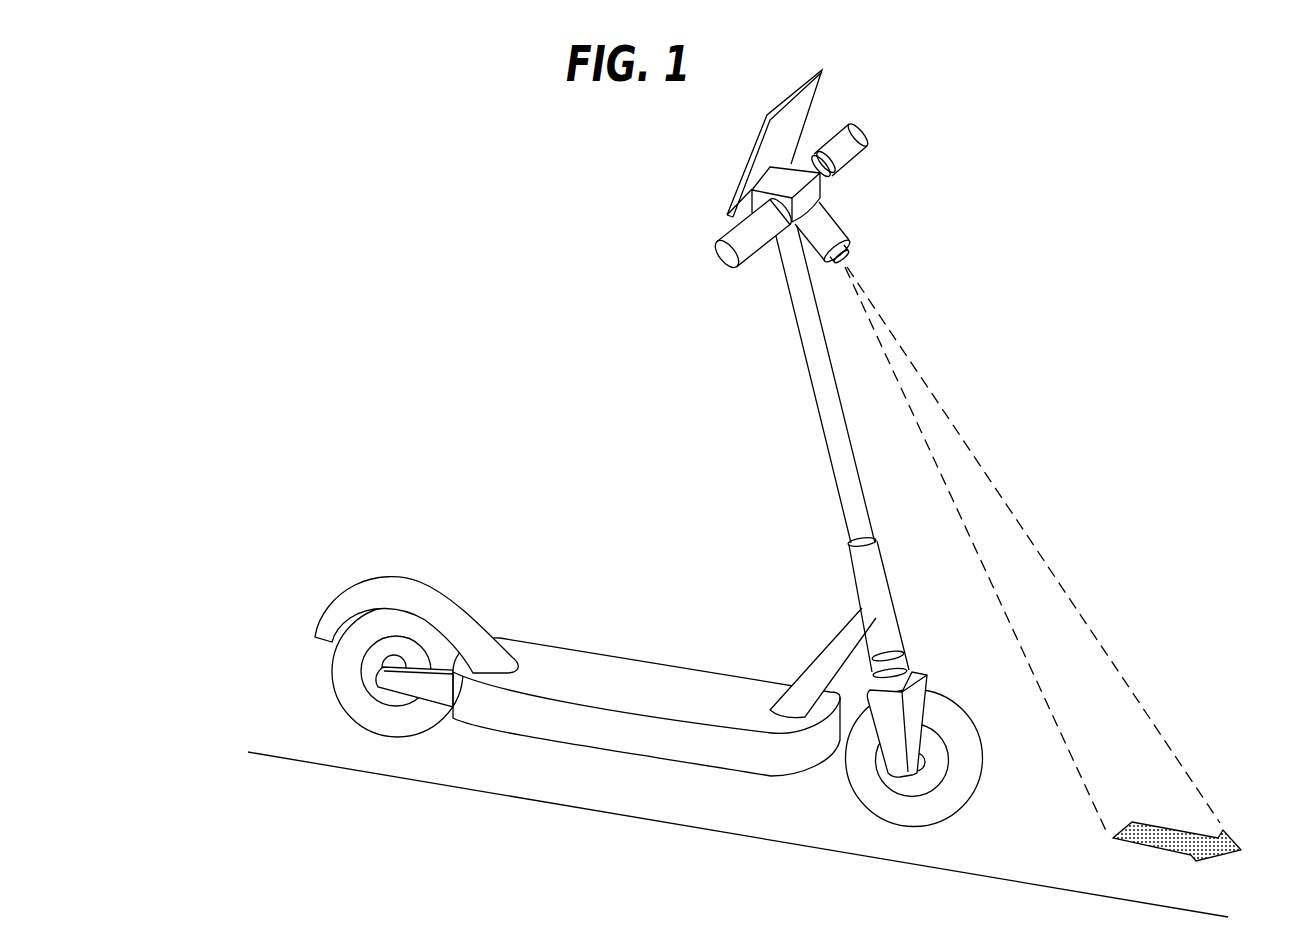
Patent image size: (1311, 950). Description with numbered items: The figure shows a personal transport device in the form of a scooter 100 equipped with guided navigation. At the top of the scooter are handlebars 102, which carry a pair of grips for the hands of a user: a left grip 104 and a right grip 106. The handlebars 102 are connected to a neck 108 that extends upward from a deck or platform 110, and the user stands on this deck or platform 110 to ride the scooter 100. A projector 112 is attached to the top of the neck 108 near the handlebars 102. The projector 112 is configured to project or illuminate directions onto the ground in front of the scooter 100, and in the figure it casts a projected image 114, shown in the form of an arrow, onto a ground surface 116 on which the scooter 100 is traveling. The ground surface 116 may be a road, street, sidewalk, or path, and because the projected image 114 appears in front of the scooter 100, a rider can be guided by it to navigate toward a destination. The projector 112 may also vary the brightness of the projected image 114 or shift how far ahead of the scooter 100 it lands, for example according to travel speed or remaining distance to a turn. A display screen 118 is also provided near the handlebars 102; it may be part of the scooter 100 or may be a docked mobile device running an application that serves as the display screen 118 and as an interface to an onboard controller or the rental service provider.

The scooter 100 is at (767, 452).
The handlebars 102 is at (836, 191).
The left grip 104 is at (853, 134).
The right grip 106 is at (733, 237).
The neck 108 is at (822, 383).
The deck or platform 110 is at (662, 700).
The projector 112 is at (830, 233).
The projected image 114 is at (1228, 866).
The ground surface 116 is at (1037, 850).
The display screen 118 is at (815, 97).